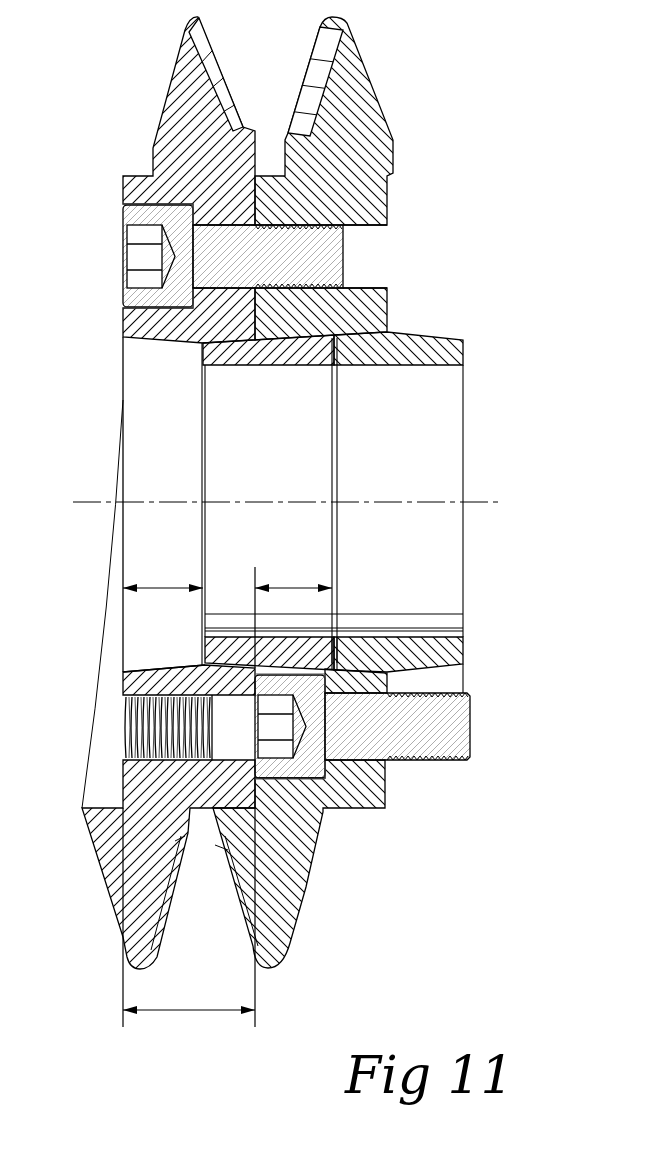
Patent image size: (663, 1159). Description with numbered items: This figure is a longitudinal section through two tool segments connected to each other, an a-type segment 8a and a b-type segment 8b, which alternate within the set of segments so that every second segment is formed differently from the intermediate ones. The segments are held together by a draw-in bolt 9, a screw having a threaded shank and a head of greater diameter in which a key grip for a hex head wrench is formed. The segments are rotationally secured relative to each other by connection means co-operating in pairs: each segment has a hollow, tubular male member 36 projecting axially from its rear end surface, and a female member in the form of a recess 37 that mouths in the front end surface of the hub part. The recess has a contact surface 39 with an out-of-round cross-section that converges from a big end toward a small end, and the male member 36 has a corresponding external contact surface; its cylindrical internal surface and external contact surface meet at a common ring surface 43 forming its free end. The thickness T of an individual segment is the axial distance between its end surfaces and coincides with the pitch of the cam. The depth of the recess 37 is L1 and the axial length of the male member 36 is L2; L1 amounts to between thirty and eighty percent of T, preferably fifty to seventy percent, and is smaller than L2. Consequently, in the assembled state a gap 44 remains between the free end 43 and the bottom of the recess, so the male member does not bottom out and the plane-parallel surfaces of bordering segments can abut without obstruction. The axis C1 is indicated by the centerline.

The segment 8a is at (160, 58).
The segment 8b is at (378, 58).
The draw-in bolt 9 is at (460, 778).
The male member 36 is at (315, 330).
The recess 37 is at (126, 659).
The contact surface 39 is at (182, 445).
The ring surface 43 is at (333, 650).
The gap 44 is at (335, 429).
The depth of the recess L1 is at (163, 573).
The axial length of the male member L2 is at (293, 611).
The thickness of the individual segment T is at (189, 917).
The centerline / axis C1 is at (497, 505).